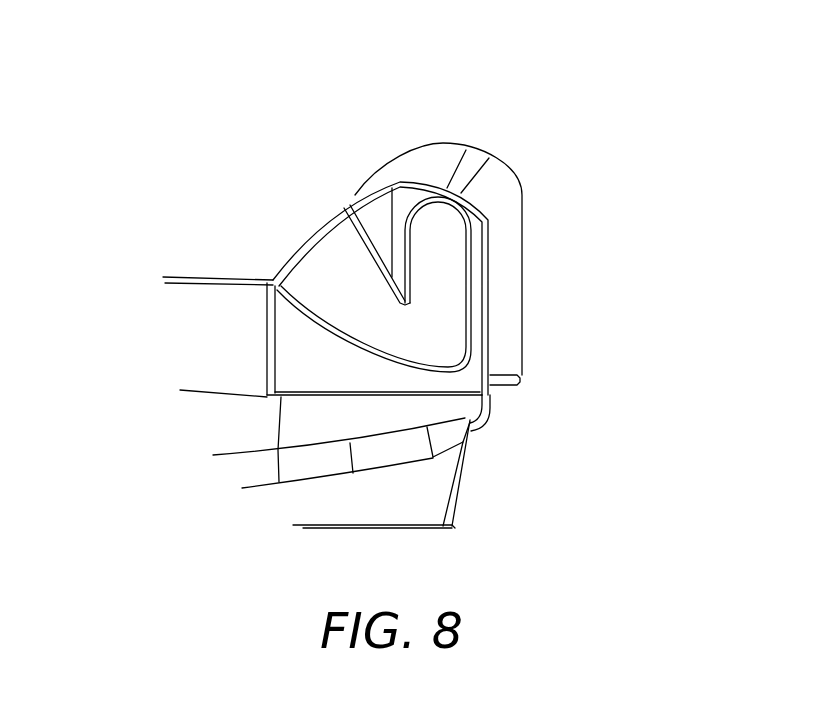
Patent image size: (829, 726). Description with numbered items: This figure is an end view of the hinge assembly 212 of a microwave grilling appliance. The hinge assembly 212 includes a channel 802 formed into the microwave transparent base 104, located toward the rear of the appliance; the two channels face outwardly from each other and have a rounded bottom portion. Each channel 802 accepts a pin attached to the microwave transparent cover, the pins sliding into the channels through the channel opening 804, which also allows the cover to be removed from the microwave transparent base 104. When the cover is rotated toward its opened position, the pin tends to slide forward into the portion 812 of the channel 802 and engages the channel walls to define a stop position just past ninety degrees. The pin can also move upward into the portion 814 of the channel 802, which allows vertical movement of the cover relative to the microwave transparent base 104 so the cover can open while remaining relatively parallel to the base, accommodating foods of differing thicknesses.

The microwave transparent base 104 is at (202, 428).
The hinge assembly 212 is at (542, 332).
The channel 802 is at (437, 253).
The channel opening 804 is at (292, 240).
The channel portion 812 is at (328, 273).
The channel portion 814 is at (430, 223).